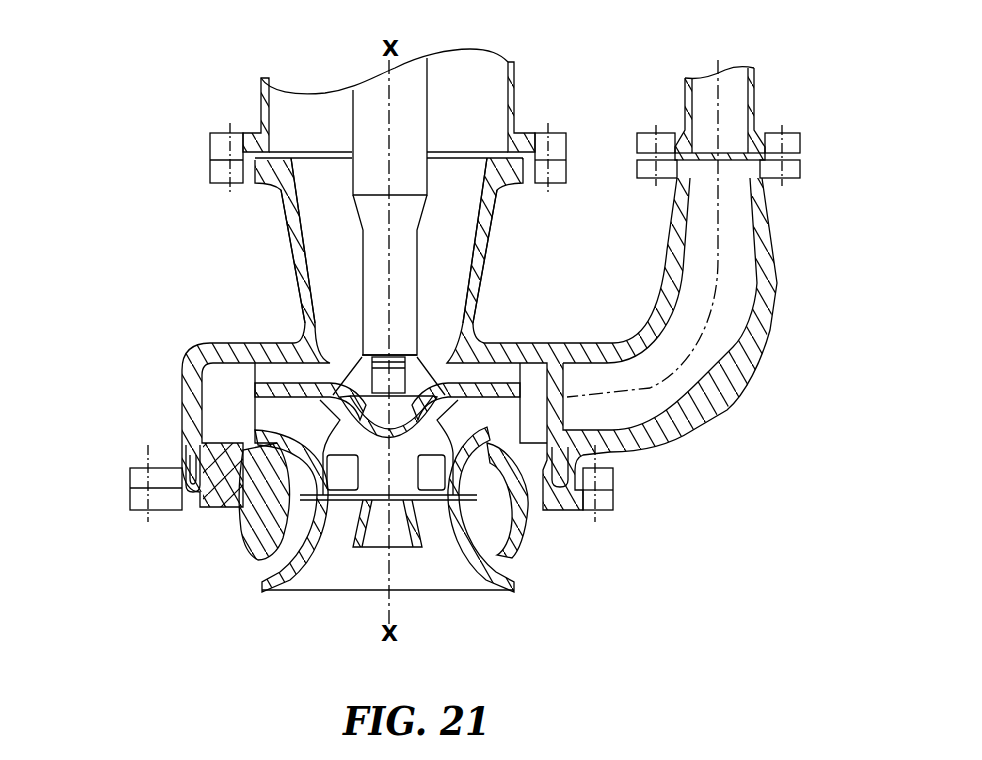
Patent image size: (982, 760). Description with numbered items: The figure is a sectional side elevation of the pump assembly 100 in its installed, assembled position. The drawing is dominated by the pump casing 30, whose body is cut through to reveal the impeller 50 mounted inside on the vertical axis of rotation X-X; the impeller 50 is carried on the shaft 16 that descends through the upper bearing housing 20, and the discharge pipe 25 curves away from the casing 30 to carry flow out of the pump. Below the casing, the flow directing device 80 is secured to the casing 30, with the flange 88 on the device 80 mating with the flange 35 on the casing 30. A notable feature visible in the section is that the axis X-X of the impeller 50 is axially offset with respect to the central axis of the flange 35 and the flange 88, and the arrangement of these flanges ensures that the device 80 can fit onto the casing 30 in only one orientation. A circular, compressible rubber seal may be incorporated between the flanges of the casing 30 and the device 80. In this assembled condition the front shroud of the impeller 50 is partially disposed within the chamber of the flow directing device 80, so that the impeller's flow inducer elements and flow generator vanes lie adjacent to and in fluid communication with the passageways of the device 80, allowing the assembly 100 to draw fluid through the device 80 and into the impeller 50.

The pump assembly 100 is at (182, 325).
The shaft 16 is at (413, 95).
The bearing housing 20 is at (522, 95).
The discharge pipe 25 is at (770, 93).
The pump casing 30 is at (490, 298).
The flange 35 is at (180, 463).
The impeller 50 is at (243, 407).
The flow directing device 80 is at (562, 514).
The flange 88 is at (180, 496).